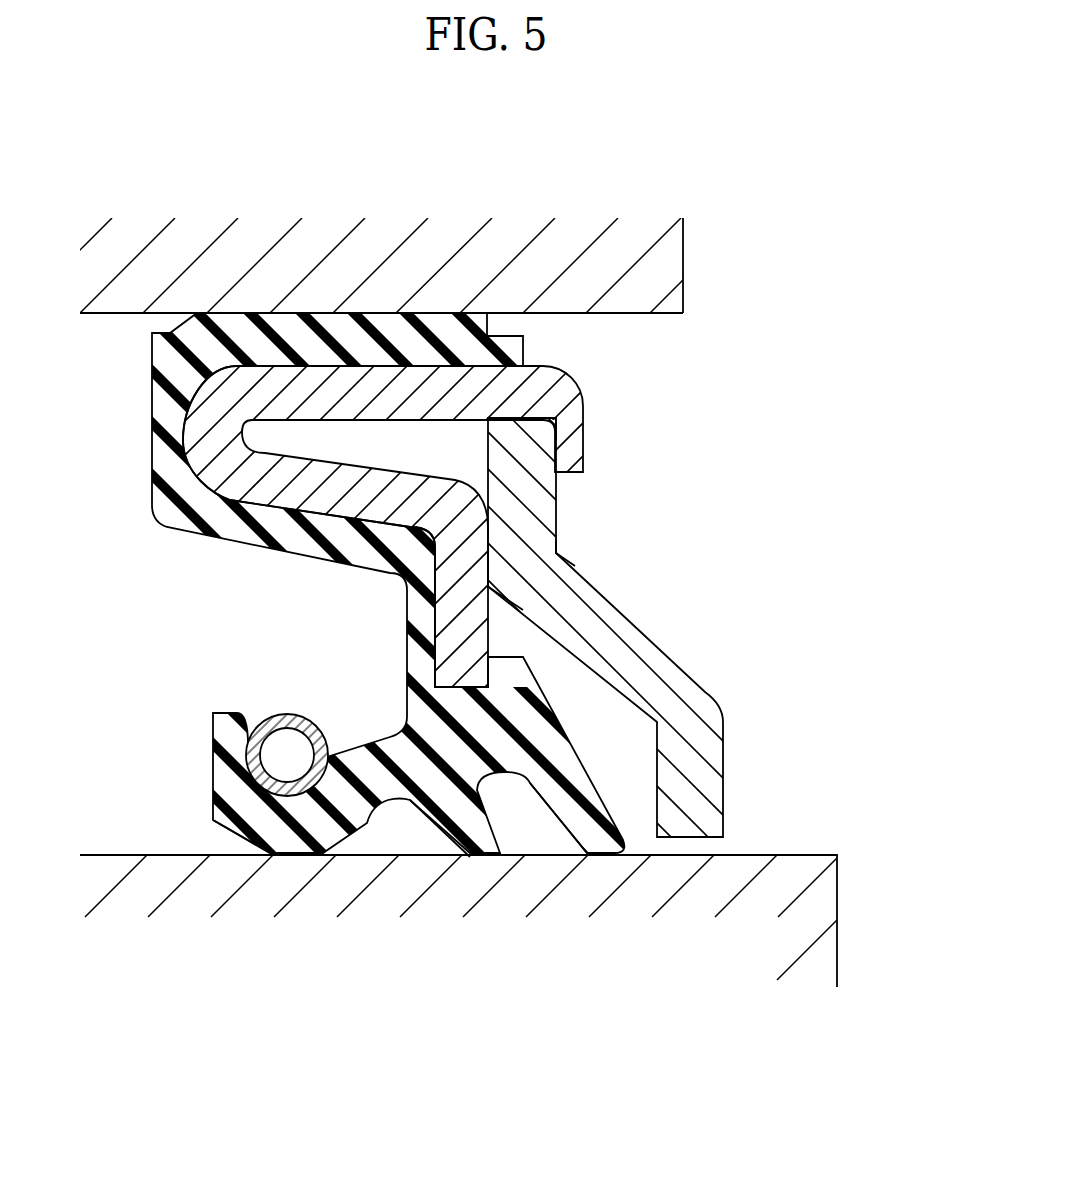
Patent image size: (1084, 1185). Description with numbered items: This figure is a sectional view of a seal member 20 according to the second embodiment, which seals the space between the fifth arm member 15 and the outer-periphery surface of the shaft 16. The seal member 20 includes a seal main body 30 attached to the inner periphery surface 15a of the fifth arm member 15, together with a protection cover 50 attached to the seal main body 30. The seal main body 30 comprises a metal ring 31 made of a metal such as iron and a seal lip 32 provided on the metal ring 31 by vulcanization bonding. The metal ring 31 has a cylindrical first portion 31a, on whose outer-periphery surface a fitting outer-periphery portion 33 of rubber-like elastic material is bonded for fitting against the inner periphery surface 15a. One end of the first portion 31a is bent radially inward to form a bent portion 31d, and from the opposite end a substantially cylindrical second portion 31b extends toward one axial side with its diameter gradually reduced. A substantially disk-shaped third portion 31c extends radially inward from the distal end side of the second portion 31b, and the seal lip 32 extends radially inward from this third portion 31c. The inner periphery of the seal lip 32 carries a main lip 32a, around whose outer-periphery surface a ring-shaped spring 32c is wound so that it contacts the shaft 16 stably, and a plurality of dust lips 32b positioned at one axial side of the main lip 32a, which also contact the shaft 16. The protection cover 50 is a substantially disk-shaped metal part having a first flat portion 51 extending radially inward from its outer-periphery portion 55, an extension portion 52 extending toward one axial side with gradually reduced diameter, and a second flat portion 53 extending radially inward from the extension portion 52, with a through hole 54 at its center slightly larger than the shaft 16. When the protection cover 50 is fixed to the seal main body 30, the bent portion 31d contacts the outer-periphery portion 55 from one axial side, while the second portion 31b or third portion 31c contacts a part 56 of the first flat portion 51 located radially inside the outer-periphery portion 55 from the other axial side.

The fifth arm member 15 is at (683, 232).
The inner periphery surface 15a is at (607, 315).
The shaft 16 is at (837, 940).
The seal member 20 is at (760, 677).
The seal main body 30 is at (152, 392).
The metal ring 31 is at (250, 428).
The first portion 31a is at (373, 383).
The second portion 31b is at (272, 496).
The third portion 31c is at (453, 597).
The bent portion 31d is at (573, 455).
The seal lip 32 is at (353, 746).
The main lip 32a is at (245, 835).
The dust lip 32b is at (470, 840).
The ring-shaped spring 32c is at (290, 713).
The fitting outer-periphery portion 33 is at (291, 325).
The protection cover 50 is at (667, 640).
The first flat portion 51 is at (543, 495).
The extension portion 52 is at (617, 633).
The second flat portion 53 is at (707, 762).
The through hole 54 is at (700, 846).
The outer-periphery portion 55 is at (545, 433).
The part 56 is at (503, 553).